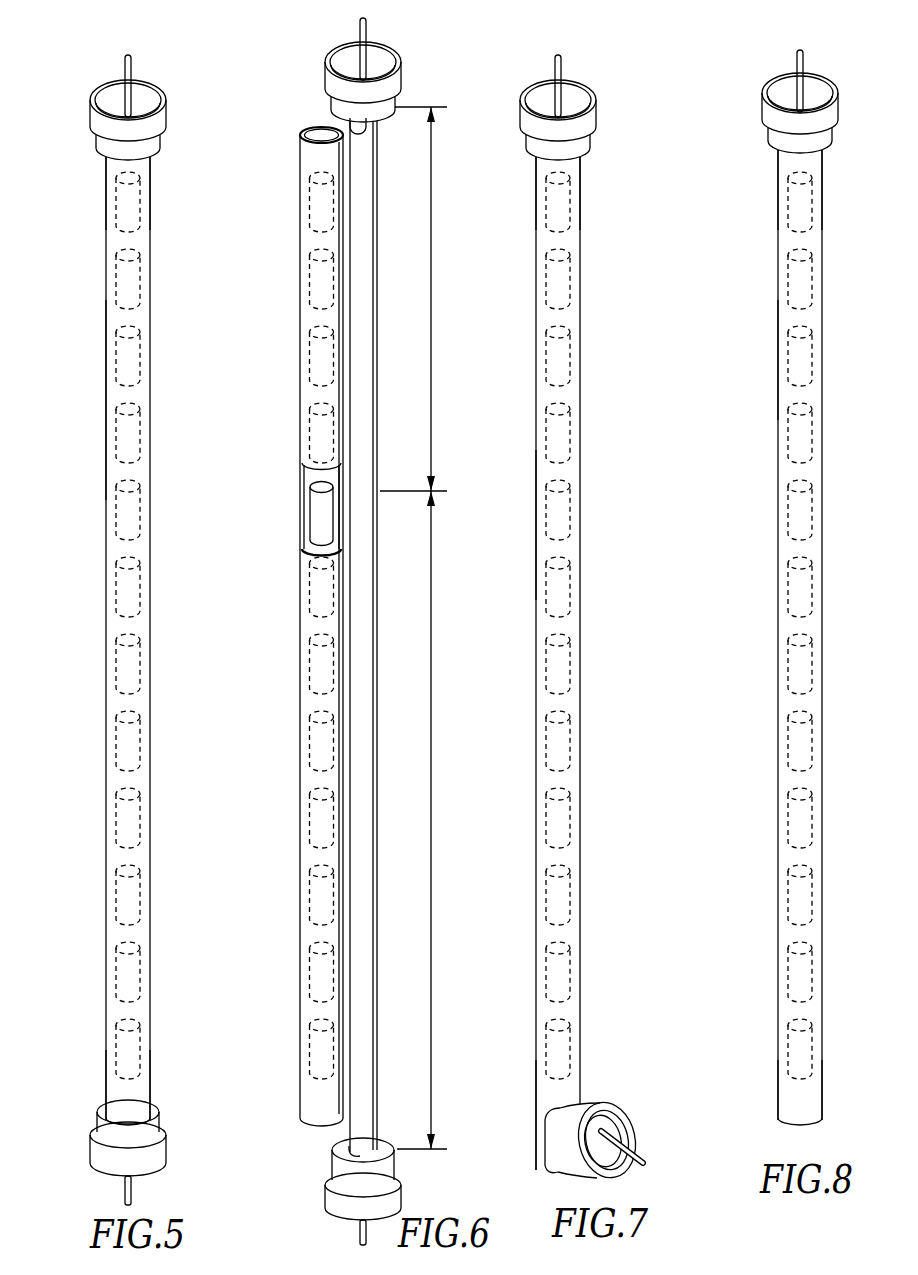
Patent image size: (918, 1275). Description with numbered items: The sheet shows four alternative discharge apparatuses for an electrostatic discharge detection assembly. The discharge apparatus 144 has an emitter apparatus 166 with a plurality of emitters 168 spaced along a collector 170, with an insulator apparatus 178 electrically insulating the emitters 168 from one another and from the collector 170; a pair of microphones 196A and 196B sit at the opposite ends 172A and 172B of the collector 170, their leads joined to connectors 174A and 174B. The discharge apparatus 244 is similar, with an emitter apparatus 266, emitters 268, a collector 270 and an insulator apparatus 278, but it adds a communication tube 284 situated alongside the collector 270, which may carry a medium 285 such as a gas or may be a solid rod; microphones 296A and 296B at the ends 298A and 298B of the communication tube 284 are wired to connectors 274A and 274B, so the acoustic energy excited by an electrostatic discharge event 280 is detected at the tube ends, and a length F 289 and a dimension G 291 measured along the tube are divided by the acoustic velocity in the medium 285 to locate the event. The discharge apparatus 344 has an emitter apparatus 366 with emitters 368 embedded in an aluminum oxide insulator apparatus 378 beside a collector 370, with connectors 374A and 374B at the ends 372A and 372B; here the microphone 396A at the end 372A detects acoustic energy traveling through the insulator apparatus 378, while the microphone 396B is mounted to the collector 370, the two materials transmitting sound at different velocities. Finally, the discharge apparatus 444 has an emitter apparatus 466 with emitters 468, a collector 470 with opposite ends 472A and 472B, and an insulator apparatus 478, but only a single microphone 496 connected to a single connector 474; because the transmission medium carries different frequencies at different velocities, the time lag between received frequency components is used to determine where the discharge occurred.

In FIG. 5, the discharge apparatus 144 is at (151, 55).
In FIG. 5, the connector 174A is at (166, 106).
In FIG. 5, the microphone 196A is at (152, 143).
In FIG. 5, the end 172A is at (150, 157).
In FIG. 5, the emitter apparatus 166 is at (147, 418).
In FIG. 5, the emitters 168 is at (108, 424).
In FIG. 5, the collector 170 is at (106, 700).
In FIG. 5, the insulator apparatus 178 is at (148, 700).
In FIG. 5, the end 172B is at (128, 1120).
In FIG. 5, the microphone 196B is at (150, 1128).
In FIG. 5, the connector 174B is at (162, 1150).
In FIG. 6, the discharge apparatus 244 is at (384, 202).
In FIG. 6, the connector 274A is at (400, 70).
In FIG. 6, the microphone 296A is at (398, 106).
In FIG. 6, the end 298A is at (352, 132).
In FIG. 6, the medium 285 is at (366, 397).
In FIG. 6, the communication tube 284 is at (378, 450).
In FIG. 6, the collector 270 is at (302, 784).
In FIG. 6, the emitters 268 is at (306, 431).
In FIG. 6, the insulator apparatus 278 is at (303, 704).
In FIG. 6, the emitter apparatus 266 is at (291, 526).
In FIG. 6, the electrostatic discharge event 280 is at (338, 494).
In FIG. 6, the length F 289 is at (431, 312).
In FIG. 6, the dimension G 291 is at (431, 824).
In FIG. 6, the end 298B is at (356, 1157).
In FIG. 6, the microphone 296B is at (396, 1160).
In FIG. 6, the connector 274B is at (328, 1198).
In FIG. 7, the discharge apparatus 344 is at (598, 214).
In FIG. 7, the connector 374A is at (522, 110).
In FIG. 7, the microphone 396A is at (535, 143).
In FIG. 7, the end 372A is at (592, 150).
In FIG. 7, the collector 370 is at (538, 726).
In FIG. 7, the emitter apparatus 366 is at (539, 522).
In FIG. 7, the emitters 368 is at (545, 430).
In FIG. 7, the insulator apparatus 378 is at (552, 622).
In FIG. 7, the end 372B is at (538, 1120).
In FIG. 7, the microphone 396B is at (550, 1136).
In FIG. 7, the connector 374B is at (604, 1106).
In FIG. 8, the discharge apparatus 444 is at (764, 203).
In FIG. 8, the connector 474 is at (766, 108).
In FIG. 8, the microphone 496 is at (780, 146).
In FIG. 8, the end 472A is at (824, 156).
In FIG. 8, the collector 470 is at (780, 622).
In FIG. 8, the emitter apparatus 466 is at (774, 355).
In FIG. 8, the emitters 468 is at (786, 283).
In FIG. 8, the insulator apparatus 478 is at (780, 550).
In FIG. 8, the end 472B is at (792, 1122).